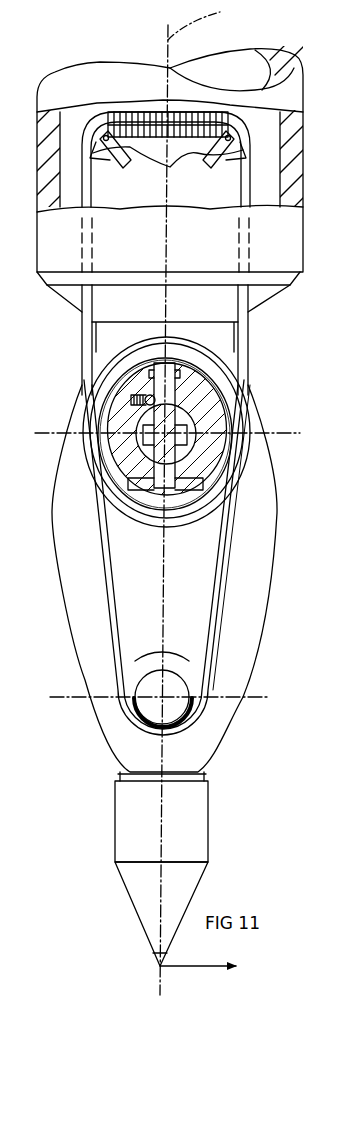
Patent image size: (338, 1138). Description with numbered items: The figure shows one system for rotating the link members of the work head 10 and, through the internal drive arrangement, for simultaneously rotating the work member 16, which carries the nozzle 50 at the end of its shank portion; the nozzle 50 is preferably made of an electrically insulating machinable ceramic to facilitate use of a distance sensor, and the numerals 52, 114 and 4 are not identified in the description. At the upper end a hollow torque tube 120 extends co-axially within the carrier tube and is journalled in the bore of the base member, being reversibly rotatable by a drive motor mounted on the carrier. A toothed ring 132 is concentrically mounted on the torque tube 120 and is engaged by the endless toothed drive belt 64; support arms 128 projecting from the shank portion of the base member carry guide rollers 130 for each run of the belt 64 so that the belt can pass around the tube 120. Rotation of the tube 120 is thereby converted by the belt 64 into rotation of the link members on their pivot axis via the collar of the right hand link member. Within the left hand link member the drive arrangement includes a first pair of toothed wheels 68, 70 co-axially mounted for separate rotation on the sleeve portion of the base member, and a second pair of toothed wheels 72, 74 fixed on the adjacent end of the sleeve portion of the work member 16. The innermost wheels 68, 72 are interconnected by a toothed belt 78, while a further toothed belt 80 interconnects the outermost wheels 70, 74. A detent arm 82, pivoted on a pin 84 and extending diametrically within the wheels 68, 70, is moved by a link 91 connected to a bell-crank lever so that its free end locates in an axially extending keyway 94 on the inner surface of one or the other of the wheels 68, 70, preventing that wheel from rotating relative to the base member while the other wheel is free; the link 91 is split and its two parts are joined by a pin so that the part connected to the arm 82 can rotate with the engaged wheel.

The work head 10 is at (160, 505).
The work member 16 is at (110, 836).
The nozzle 50 is at (145, 908).
The tip point 52 is at (159, 968).
The toothed drive belt 64 is at (83, 150).
The toothed wheel 68 is at (123, 488).
The toothed wheel 70 is at (165, 434).
The toothed wheel 72 is at (153, 662).
The toothed wheel 74 is at (175, 707).
The toothed belt 78 is at (217, 650).
The toothed belt 80 is at (213, 593).
The detent arm 82 is at (172, 415).
The pin 84 is at (188, 493).
The link 91 is at (238, 497).
The keyway 94 is at (175, 350).
The body portion 114 is at (8, 497).
The member 4 is at (3, 532).
The torque tube 120 is at (153, 108).
The support arms 128 is at (165, 157).
The guide rollers 130 is at (62, 90).
The toothed ring 132 is at (107, 113).